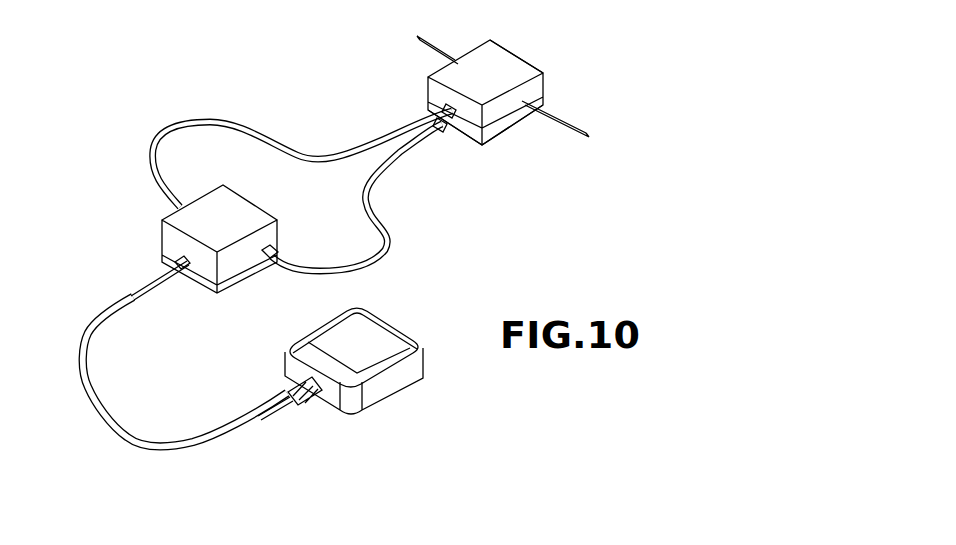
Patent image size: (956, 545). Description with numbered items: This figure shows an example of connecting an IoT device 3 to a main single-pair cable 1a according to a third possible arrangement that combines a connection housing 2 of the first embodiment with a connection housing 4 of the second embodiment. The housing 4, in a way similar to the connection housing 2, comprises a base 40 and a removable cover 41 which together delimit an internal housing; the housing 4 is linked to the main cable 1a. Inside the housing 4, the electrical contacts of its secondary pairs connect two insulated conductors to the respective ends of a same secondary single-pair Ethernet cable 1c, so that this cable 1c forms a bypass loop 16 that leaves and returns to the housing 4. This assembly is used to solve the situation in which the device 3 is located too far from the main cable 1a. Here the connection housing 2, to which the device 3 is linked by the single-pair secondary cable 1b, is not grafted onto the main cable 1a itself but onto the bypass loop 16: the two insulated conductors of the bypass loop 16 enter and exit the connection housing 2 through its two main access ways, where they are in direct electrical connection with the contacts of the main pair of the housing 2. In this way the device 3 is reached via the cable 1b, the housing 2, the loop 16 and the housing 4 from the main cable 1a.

The main single-pair cable 1a is at (415, 45).
The single-pair secondary cable 1b is at (95, 298).
The secondary single-pair Ethernet cable 1c is at (301, 133).
The connection housing 2 is at (177, 215).
The device 3 is at (392, 362).
The connection housing 4 is at (513, 48).
The bypass loop 16 is at (373, 183).
The base 40 is at (500, 127).
The removable cover 41 is at (545, 77).